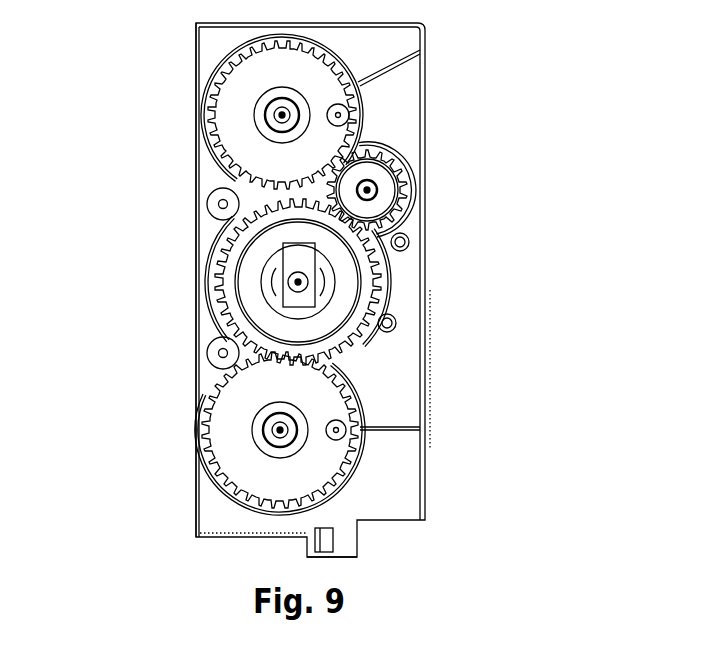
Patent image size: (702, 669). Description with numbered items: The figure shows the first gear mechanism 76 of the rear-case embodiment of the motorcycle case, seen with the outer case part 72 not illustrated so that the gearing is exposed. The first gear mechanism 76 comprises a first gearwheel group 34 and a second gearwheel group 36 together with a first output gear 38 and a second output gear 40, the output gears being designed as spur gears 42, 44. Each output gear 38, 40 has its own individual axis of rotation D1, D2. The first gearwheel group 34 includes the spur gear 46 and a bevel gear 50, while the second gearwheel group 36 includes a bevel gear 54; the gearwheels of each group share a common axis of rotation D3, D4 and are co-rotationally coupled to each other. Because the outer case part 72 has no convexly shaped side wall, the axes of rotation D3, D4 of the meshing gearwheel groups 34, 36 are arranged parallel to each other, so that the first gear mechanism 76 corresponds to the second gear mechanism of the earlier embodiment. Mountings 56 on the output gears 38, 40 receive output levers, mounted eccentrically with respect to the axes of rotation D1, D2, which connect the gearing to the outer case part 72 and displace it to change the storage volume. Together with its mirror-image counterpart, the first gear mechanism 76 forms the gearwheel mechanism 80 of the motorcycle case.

The gearwheel mechanism 80 is at (144, 80).
The first gear mechanism 76 is at (160, 521).
The outer case part 72 is at (375, 485).
The second output gear 40 is at (309, 115).
The spur gear 44 is at (305, 60).
The first output gear 38 is at (309, 430).
The spur gear 42 is at (313, 397).
The mountings of the output levers 56 is at (345, 115).
The bevel gear 54 is at (325, 183).
The bevel gear 50 is at (233, 328).
The second gearwheel group 36 is at (378, 205).
The first gearwheel group 34 is at (352, 268).
The spur gear 46 is at (240, 300).
The axis of rotation D1 is at (280, 430).
The axis of rotation D2 is at (282, 115).
The axis of rotation D3 is at (298, 282).
The axis of rotation D4 is at (367, 192).